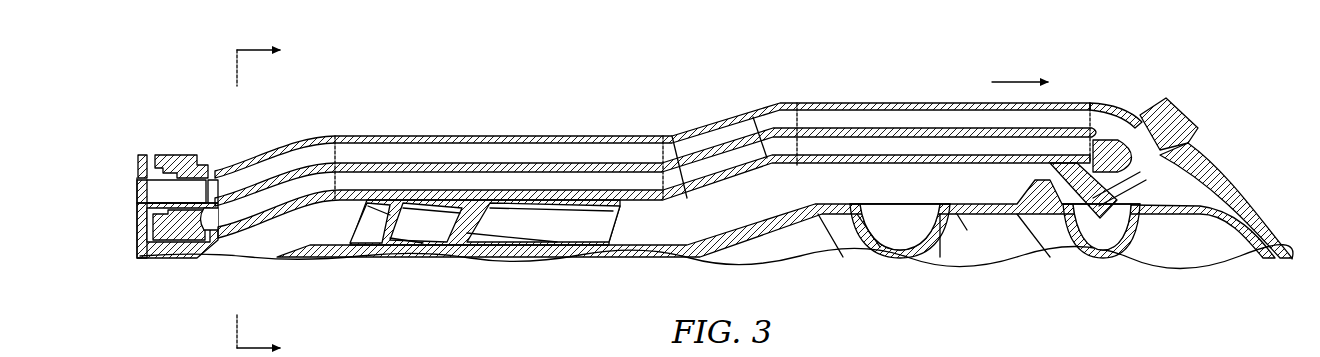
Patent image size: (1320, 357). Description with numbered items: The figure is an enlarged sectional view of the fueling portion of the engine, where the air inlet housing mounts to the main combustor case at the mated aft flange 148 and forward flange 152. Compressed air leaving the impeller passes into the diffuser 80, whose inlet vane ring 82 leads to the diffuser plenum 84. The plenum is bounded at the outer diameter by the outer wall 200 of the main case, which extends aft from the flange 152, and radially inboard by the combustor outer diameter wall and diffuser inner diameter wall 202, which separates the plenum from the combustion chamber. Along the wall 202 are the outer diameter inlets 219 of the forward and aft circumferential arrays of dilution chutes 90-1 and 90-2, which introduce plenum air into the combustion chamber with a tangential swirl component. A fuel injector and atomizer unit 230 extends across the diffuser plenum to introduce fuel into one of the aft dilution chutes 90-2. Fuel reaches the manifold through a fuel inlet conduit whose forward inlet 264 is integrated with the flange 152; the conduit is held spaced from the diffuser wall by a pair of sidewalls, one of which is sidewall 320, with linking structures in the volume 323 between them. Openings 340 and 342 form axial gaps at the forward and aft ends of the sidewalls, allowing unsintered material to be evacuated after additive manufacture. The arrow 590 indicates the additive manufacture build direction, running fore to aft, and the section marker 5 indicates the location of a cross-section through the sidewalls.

The aft flange 148 is at (142, 148).
The forward flange 152 is at (192, 146).
The inlet 264 is at (178, 220).
The opening 340 is at (213, 232).
The diffuser 80 is at (589, 221).
The volume 323 is at (558, 169).
The sidewall 320 is at (643, 178).
The outer diameter inlets 219 is at (903, 190).
The outer wall 200 is at (716, 196).
The inlet vane ring 82 is at (513, 216).
The diffuser plenum 84 is at (701, 222).
The forward dilution chutes/flow tubes 90-1 is at (898, 262).
The aft dilution chutes/flow tubes 90-2 is at (1108, 266).
The combustor OD wall/diffuser ID wall 202 is at (955, 213).
The opening 342 is at (1100, 134).
The fuel injector and atomizer unit 230 is at (1148, 98).
The additive manufacture build direction 590 is at (1018, 75).
The section line 5 is at (268, 199).